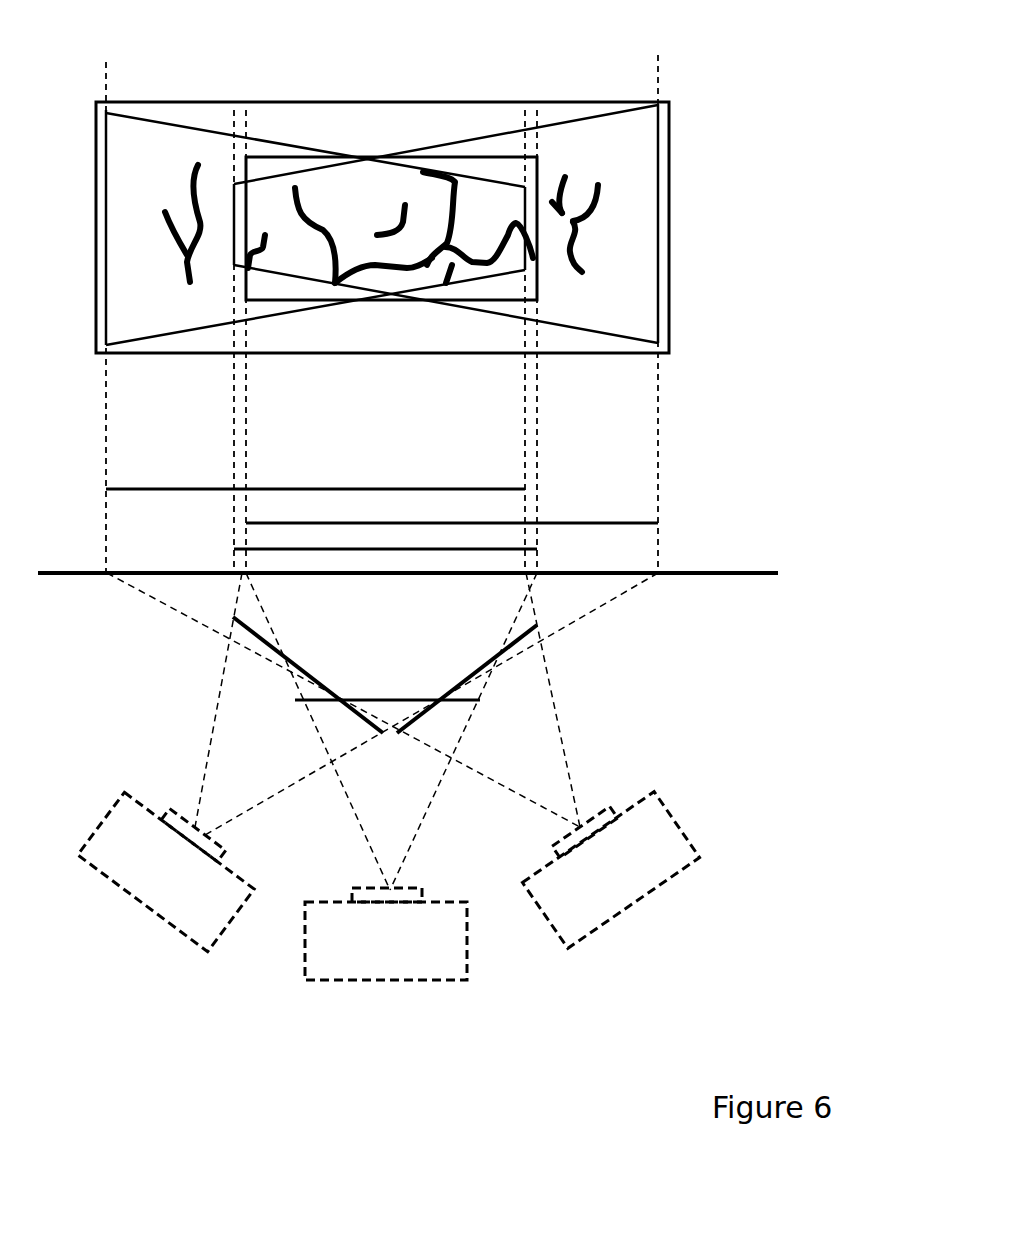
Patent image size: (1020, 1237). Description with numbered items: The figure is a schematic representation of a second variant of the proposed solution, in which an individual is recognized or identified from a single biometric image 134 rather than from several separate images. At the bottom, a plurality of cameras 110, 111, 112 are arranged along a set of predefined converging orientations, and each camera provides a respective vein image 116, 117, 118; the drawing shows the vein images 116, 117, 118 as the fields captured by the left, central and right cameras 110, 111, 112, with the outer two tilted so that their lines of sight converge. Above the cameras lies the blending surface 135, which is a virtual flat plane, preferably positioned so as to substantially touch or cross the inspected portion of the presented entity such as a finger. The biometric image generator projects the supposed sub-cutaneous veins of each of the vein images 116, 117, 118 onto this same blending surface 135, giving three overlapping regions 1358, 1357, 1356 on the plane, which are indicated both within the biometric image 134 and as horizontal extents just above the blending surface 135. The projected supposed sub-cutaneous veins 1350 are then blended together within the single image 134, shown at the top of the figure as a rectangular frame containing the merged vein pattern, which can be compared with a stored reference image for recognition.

The biometric image 134 is at (670, 305).
The blending surface 135 is at (672, 575).
The projected supposed sub-cutaneous veins 1350 is at (567, 197).
The field of view of right camera 1356 is at (582, 120).
The field of view of center camera 1357 is at (284, 158).
The field of view of left camera 1358 is at (203, 128).
The camera 110 is at (173, 900).
The camera 111 is at (388, 965).
The camera 112 is at (628, 888).
The vein image 116 is at (255, 638).
The vein image 117 is at (388, 712).
The vein image 118 is at (520, 643).